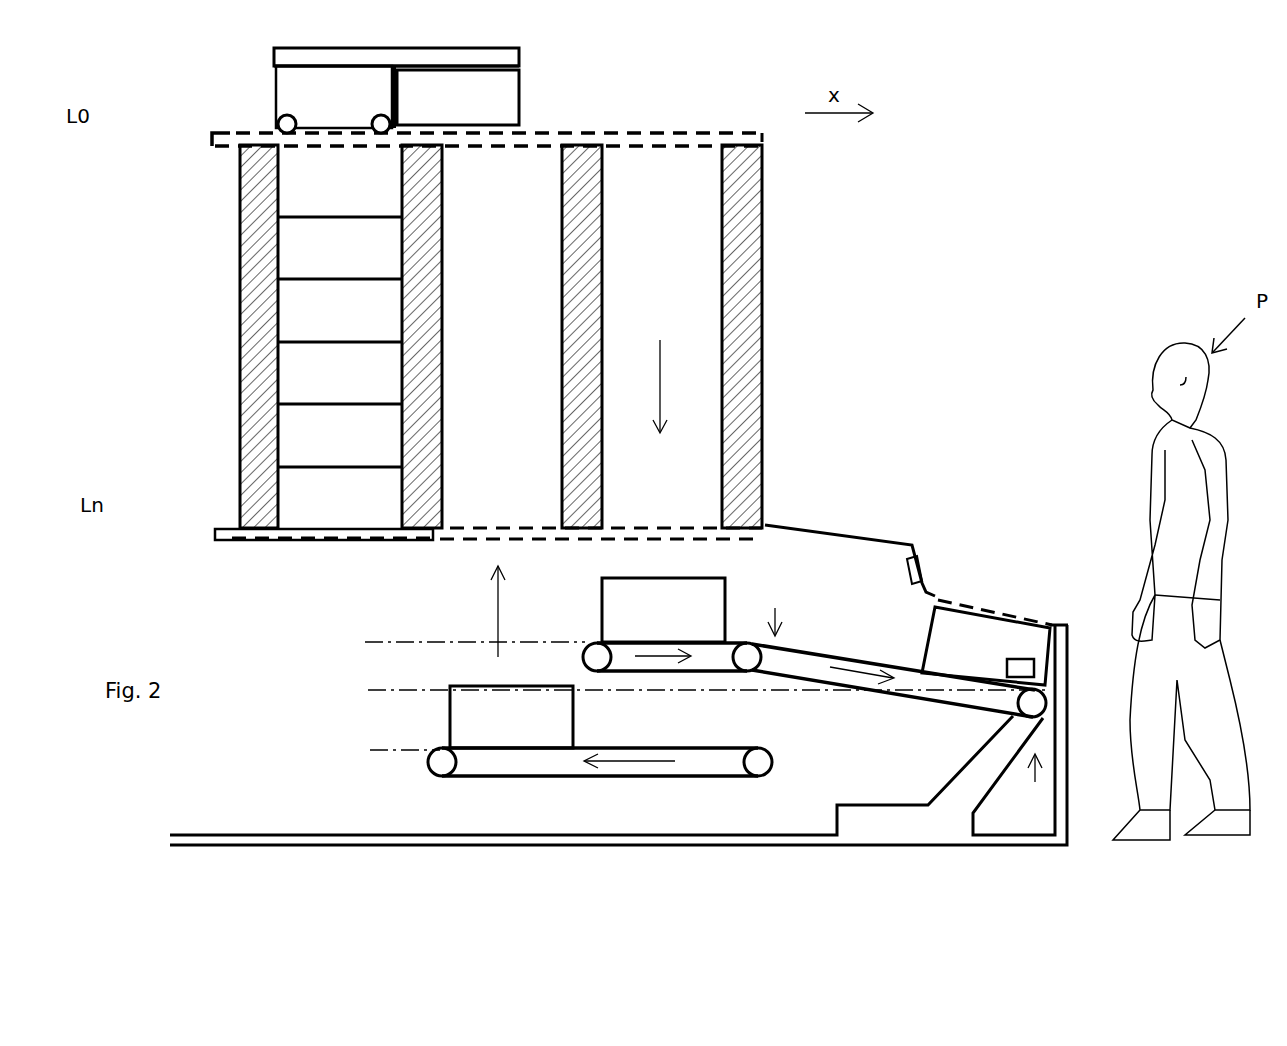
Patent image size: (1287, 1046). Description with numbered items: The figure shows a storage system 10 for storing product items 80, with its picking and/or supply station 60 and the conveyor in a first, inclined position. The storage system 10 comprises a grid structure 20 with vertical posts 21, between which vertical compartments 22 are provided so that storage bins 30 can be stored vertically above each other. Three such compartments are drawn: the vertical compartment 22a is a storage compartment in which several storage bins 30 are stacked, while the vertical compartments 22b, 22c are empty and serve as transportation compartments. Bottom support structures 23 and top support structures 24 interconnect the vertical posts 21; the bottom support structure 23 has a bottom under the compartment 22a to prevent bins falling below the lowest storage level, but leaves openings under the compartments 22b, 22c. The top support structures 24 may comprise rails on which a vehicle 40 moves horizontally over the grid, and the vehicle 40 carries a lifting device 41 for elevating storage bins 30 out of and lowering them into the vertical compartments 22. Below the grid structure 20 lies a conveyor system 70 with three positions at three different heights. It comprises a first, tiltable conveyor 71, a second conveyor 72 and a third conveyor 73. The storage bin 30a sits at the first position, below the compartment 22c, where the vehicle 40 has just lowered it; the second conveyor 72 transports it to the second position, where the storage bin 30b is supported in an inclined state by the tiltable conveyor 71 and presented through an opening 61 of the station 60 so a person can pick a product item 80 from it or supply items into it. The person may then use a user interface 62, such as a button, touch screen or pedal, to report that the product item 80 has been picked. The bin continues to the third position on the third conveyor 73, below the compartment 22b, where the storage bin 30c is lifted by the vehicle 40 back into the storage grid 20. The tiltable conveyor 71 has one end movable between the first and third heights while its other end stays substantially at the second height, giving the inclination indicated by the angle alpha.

The storage system 10 is at (202, 145).
The grid structure 20 is at (183, 343).
The vertical posts 21 is at (265, 432).
The vertical compartments 22 is at (296, 196).
The vertical compartment 22a is at (340, 336).
The vertical compartment 22b is at (502, 336).
The vertical compartment 22c is at (662, 336).
The bottom support structures 23 is at (235, 535).
The top support structures 24 is at (706, 130).
The storage bin 30 is at (488, 90).
The storage bin 30a is at (612, 600).
The storage bin 30b is at (940, 636).
The storage bin 30c is at (455, 712).
The vehicle 40 is at (300, 95).
The lifting device 41 is at (460, 63).
The picking and/or supply station 60 is at (1018, 492).
The opening 61 is at (953, 588).
The user interface 62 is at (905, 562).
The conveyor system 70 is at (300, 663).
The first, tiltable conveyor 71 is at (795, 678).
The second conveyor 72 is at (657, 665).
The third conveyor 73 is at (485, 765).
The product item 80 is at (1034, 666).